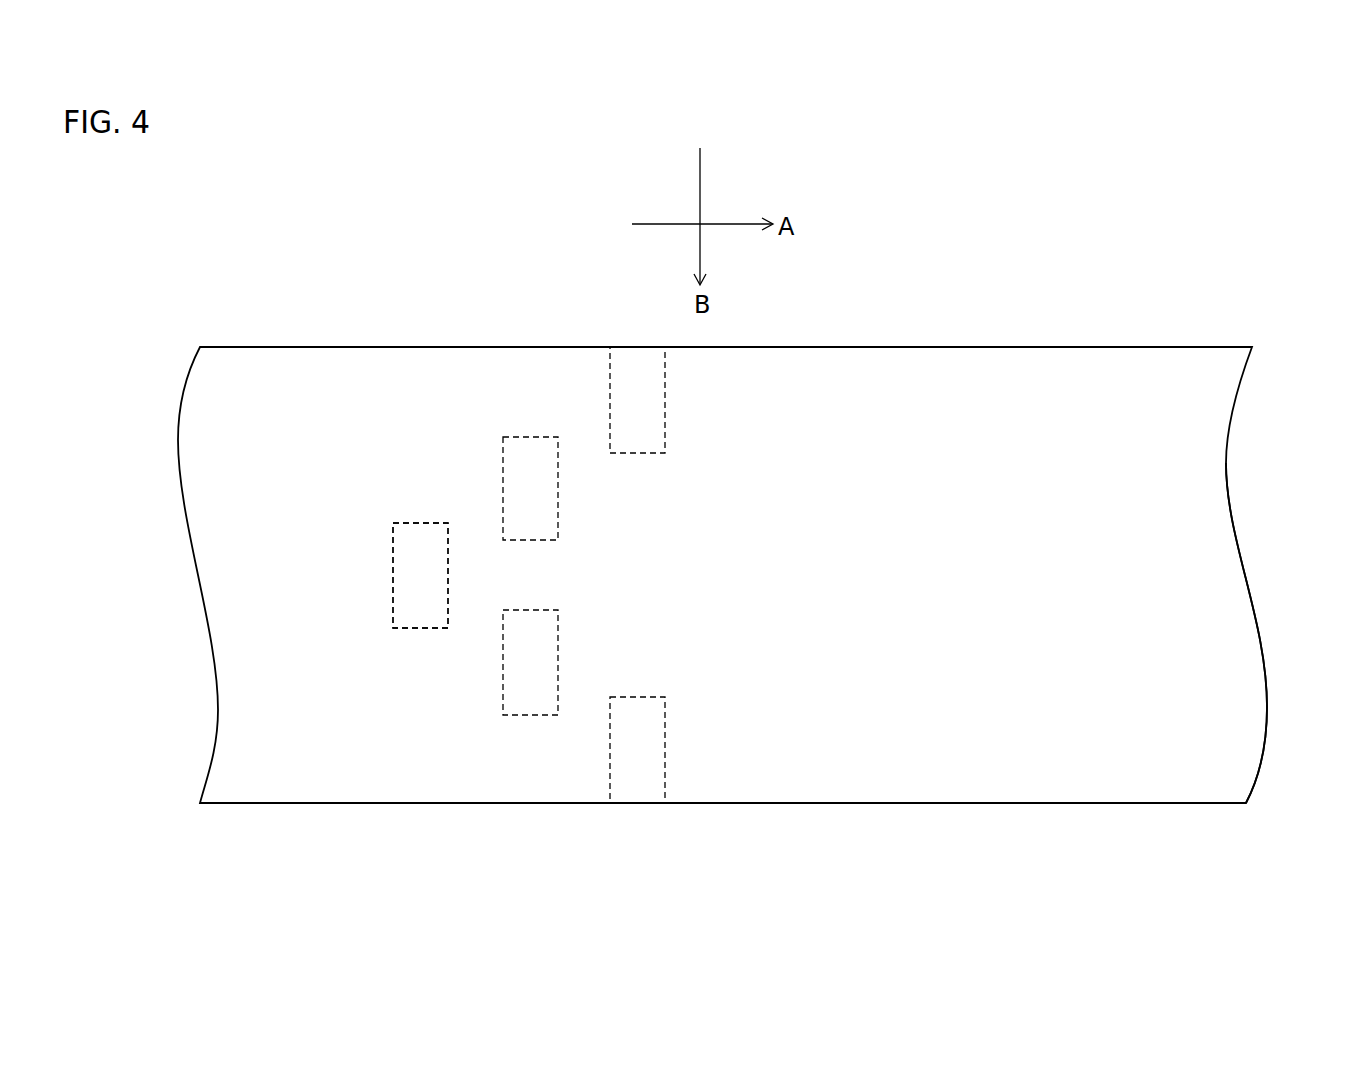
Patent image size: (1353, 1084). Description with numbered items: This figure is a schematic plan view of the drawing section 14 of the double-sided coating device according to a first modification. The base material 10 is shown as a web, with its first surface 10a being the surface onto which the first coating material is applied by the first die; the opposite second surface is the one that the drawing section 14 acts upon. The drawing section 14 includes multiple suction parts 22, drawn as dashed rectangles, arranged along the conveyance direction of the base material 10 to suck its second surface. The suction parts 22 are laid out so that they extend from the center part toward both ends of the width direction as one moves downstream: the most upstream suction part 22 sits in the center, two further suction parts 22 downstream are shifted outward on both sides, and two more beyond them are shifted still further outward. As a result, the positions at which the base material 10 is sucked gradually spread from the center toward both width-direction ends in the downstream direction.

The base material 10 is at (1173, 805).
The first surface 10a is at (1243, 722).
The drawing section 14 is at (667, 829).
The suction part 22 is at (393, 556).